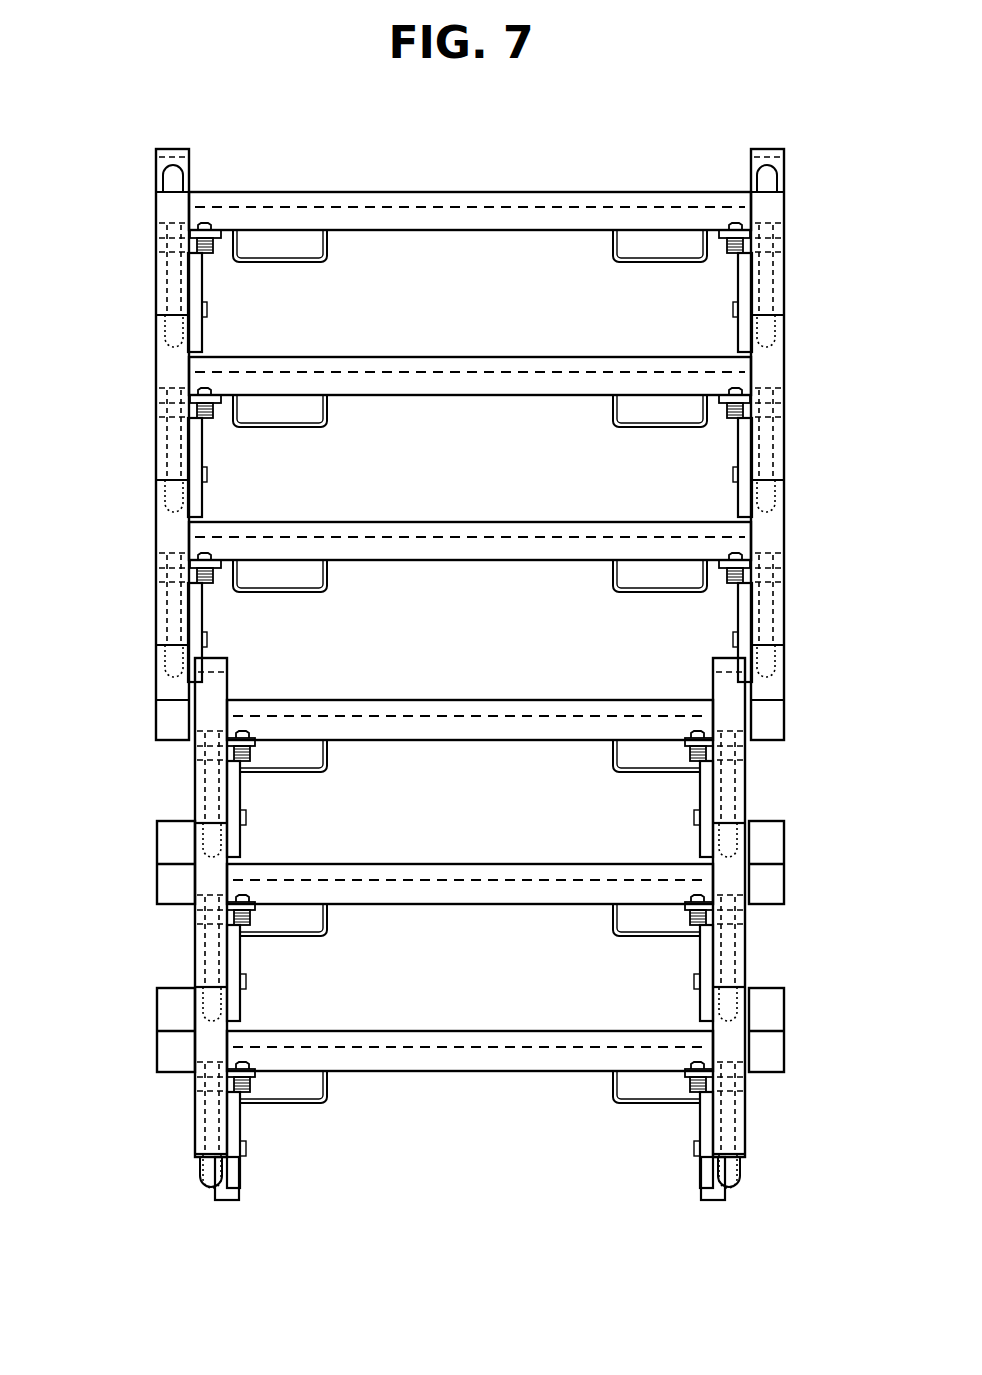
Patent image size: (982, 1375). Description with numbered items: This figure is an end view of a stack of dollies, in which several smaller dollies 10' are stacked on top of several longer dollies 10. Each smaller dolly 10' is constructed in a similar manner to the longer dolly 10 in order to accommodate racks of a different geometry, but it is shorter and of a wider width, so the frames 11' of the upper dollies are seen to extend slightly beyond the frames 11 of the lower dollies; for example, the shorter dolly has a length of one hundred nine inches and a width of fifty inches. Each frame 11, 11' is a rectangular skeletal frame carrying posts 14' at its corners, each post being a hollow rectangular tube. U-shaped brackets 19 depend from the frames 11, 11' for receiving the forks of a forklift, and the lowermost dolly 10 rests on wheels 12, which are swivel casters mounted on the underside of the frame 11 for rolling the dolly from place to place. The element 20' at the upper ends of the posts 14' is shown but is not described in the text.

The dolly 10 is at (516, 933).
The smaller dolly 10' is at (484, 426).
The frame 11 is at (470, 910).
The frame 11' is at (470, 408).
The wheel 12 is at (233, 1177).
The post 14' is at (422, 444).
The U-shaped bracket 19 is at (258, 262).
The post top cap 20' is at (470, 152).